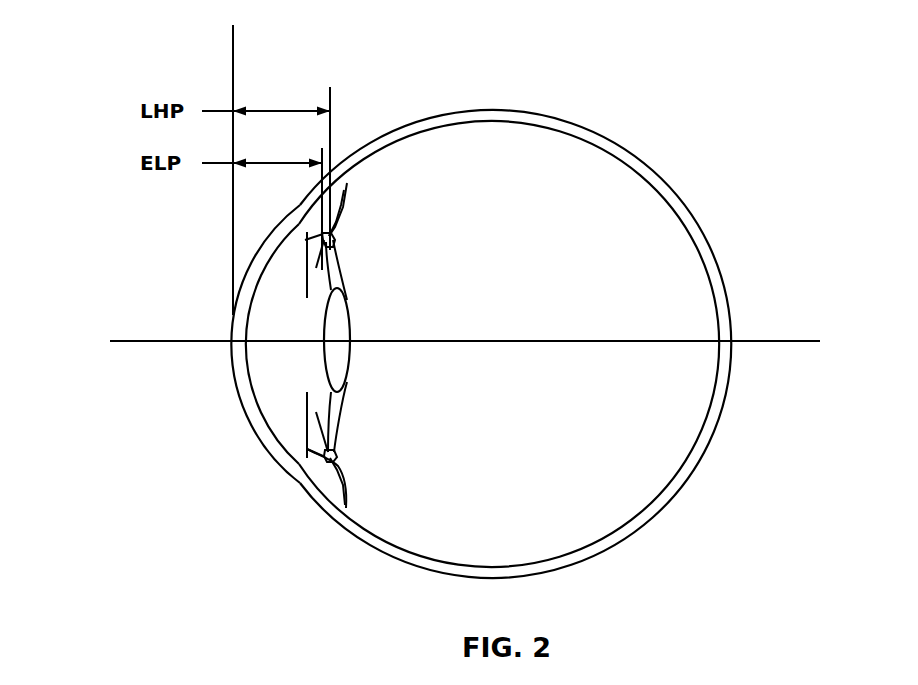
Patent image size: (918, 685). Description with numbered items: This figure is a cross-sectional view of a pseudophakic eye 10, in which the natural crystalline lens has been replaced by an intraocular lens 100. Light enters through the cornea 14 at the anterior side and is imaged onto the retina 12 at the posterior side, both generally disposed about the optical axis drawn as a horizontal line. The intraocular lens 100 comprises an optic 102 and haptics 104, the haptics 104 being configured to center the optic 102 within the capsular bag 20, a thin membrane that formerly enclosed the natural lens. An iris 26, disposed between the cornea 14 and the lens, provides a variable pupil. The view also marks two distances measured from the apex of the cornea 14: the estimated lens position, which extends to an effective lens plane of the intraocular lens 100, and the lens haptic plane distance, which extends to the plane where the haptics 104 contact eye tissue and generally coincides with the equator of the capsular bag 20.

The eye 10 is at (154, 61).
The retina 12 is at (705, 428).
The cornea 14 is at (247, 410).
The capsular bag 20 is at (348, 392).
The iris 26 is at (300, 417).
The intraocular lens 100 is at (302, 313).
The optic 102 is at (340, 327).
The haptics 104 is at (337, 262).